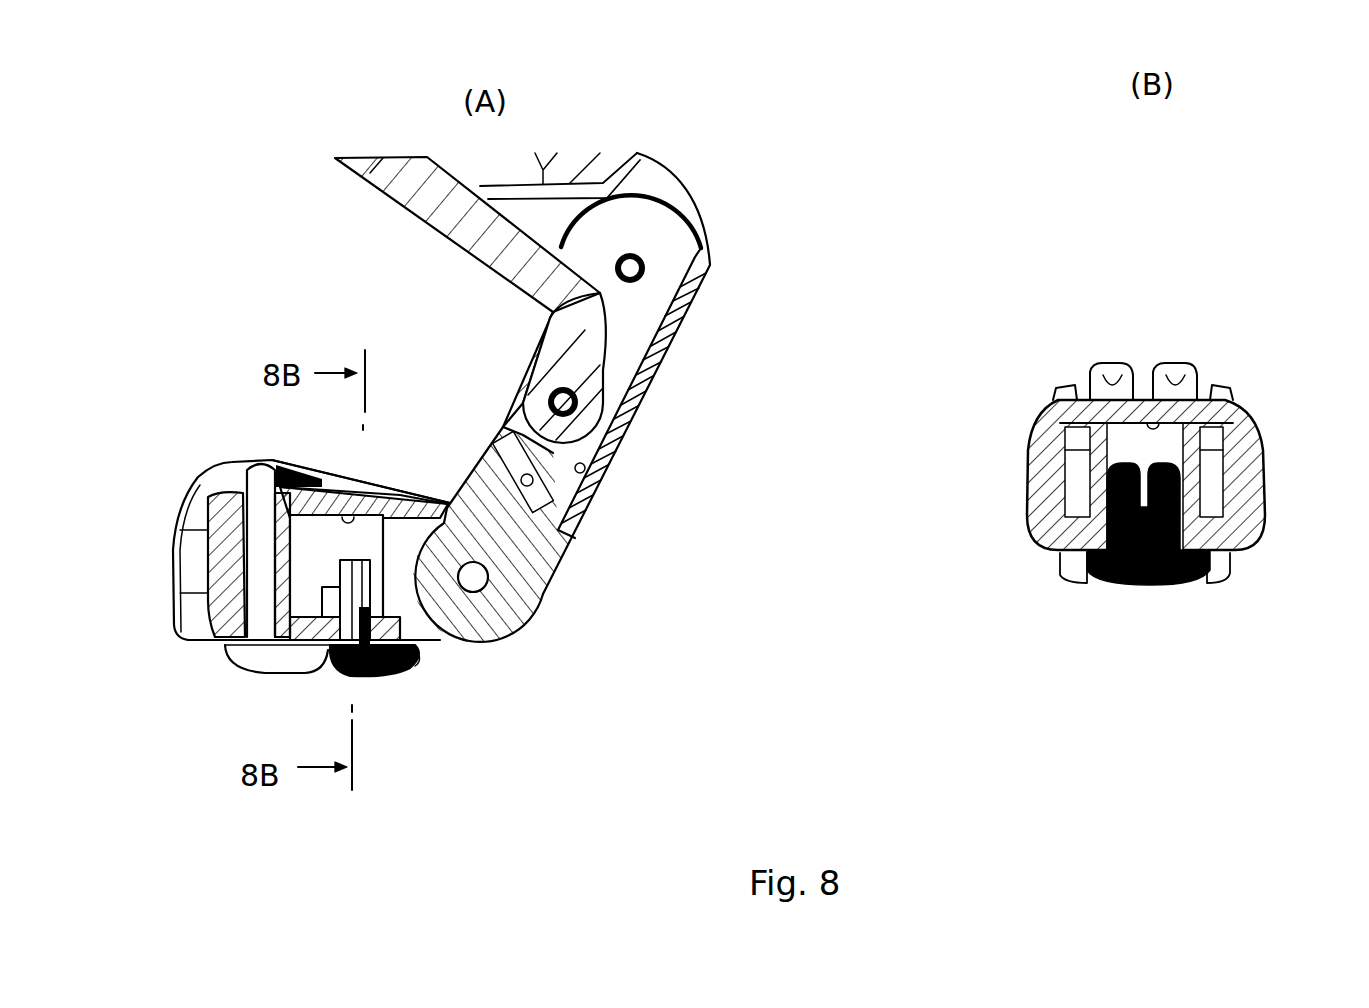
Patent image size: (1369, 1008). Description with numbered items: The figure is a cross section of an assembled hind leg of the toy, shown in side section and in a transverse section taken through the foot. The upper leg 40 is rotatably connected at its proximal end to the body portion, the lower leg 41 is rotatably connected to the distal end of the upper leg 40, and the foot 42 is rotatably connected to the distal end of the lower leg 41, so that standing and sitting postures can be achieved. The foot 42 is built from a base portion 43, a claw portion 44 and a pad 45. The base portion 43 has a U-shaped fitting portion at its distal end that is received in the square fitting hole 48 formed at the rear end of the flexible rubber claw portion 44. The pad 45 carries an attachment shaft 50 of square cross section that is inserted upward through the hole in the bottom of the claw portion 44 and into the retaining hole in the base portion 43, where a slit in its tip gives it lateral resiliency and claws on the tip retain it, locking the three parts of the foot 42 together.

In FIG. 8A, the upper leg 40 is at (425, 220).
In FIG. 8A, the lower leg 41 is at (626, 418).
In FIG. 8A, the foot 42 is at (440, 656).
In FIG. 8A, the base portion 43 is at (410, 497).
In FIG. 8B, the base portion 43 is at (1057, 410).
In FIG. 8A, the claw portion 44 is at (232, 465).
In FIG. 8B, the claw portion 44 is at (1027, 480).
In FIG. 8A, the pad 45 is at (380, 677).
In FIG. 8B, the pad 45 is at (1153, 587).
In FIG. 8A, the fitting hole 48 is at (370, 490).
In FIG. 8B, the fitting hole 48 is at (1177, 397).
In FIG. 8B, the attachment shaft 50 is at (1185, 500).